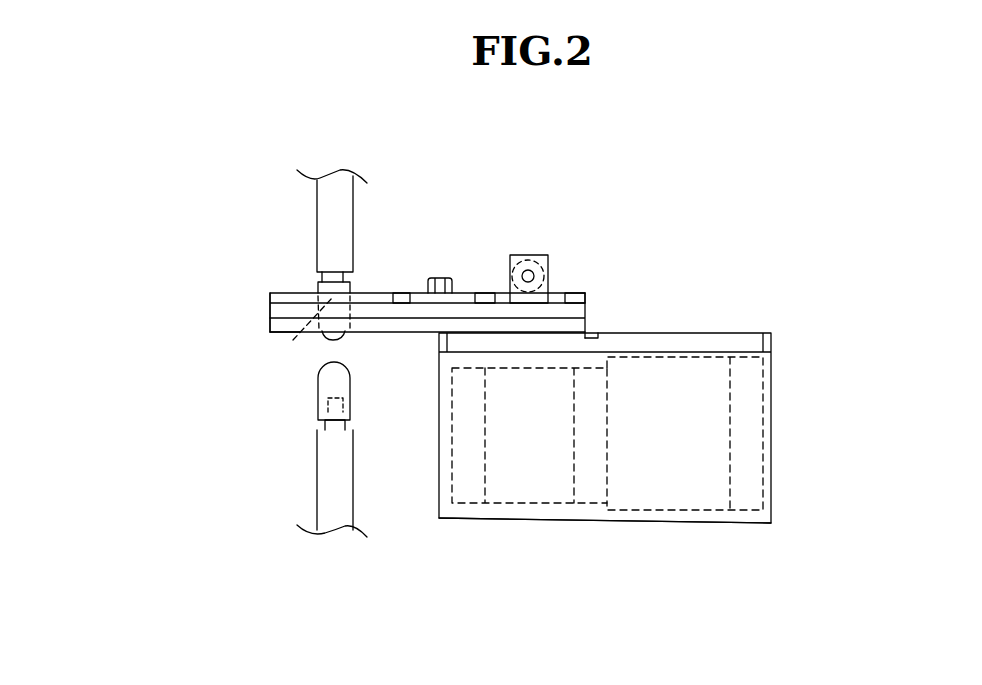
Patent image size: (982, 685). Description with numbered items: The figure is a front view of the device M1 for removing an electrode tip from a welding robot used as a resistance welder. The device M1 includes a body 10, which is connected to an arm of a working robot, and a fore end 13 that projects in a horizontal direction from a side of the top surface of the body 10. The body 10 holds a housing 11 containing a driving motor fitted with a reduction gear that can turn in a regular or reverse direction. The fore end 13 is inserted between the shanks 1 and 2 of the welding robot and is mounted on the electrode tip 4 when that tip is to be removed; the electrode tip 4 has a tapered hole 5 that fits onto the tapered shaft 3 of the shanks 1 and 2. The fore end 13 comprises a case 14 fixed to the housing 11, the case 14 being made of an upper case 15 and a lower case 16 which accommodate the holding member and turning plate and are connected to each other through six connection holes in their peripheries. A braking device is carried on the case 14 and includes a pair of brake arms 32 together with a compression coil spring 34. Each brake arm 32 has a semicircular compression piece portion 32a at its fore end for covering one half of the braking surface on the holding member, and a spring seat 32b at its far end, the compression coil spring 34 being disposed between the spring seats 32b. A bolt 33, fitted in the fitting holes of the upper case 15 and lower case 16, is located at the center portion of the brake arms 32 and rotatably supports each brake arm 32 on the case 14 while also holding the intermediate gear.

The shank 1 is at (328, 200).
The shank 2 is at (328, 492).
The tapered shaft 3 is at (336, 273).
The electrode tip 4 is at (317, 287).
The tapered hole 5 is at (293, 340).
The body 10 is at (750, 432).
The housing 11 is at (673, 518).
The fore end 13 is at (402, 254).
The case 14 is at (519, 280).
The upper case 15 is at (573, 313).
The lower case 16 is at (573, 327).
The brake arm 32 is at (466, 300).
The compression piece portion 32a is at (273, 295).
The spring seat 32b is at (540, 255).
The bolt 33 is at (442, 277).
The compression coil spring 34 is at (528, 258).
The device M1 is at (587, 569).